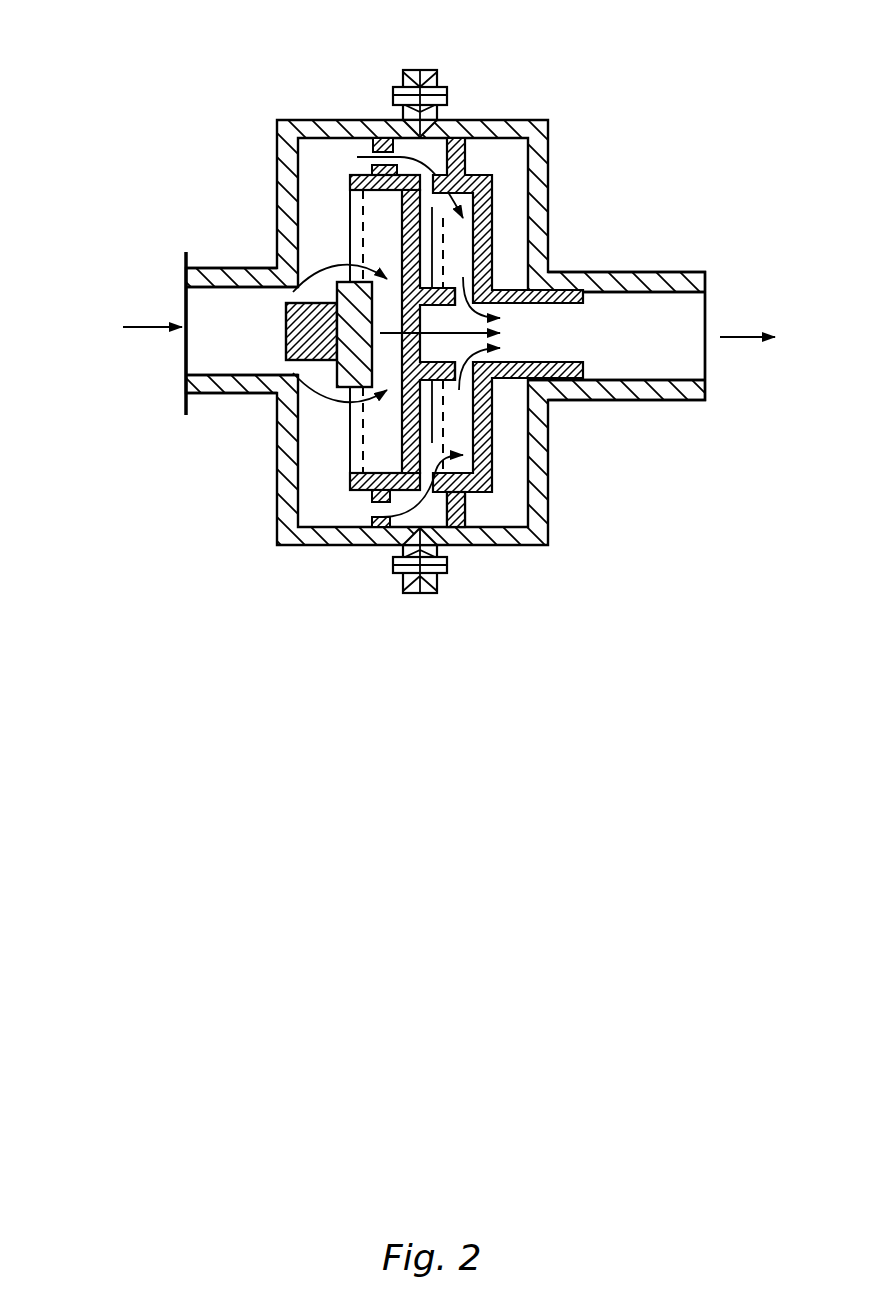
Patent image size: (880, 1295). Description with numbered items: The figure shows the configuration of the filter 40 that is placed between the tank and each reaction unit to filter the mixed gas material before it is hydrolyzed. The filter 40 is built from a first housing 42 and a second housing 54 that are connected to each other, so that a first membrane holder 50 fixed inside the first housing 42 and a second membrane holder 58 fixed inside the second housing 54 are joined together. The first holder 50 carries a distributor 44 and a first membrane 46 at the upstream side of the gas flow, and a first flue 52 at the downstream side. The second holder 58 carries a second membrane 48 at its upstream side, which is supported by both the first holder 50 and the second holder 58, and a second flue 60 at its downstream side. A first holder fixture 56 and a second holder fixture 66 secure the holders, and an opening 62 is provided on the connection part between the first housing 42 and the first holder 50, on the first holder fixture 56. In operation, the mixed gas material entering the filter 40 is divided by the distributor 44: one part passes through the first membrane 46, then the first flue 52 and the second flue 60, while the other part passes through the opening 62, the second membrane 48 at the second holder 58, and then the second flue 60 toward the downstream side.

The filter 40 is at (607, 122).
The first housing 42 is at (243, 268).
The distributor 44 is at (308, 332).
The first membrane 46 is at (357, 200).
The second membrane 48 is at (443, 435).
The first membrane holder 50 is at (357, 205).
The first flue 52 is at (425, 322).
The second housing 54 is at (652, 285).
The first holder fixture 56 is at (357, 541).
The second membrane holder 58 is at (480, 175).
The second flue 60 is at (570, 333).
The opening 62 is at (383, 513).
The second holder fixture 66 is at (463, 508).